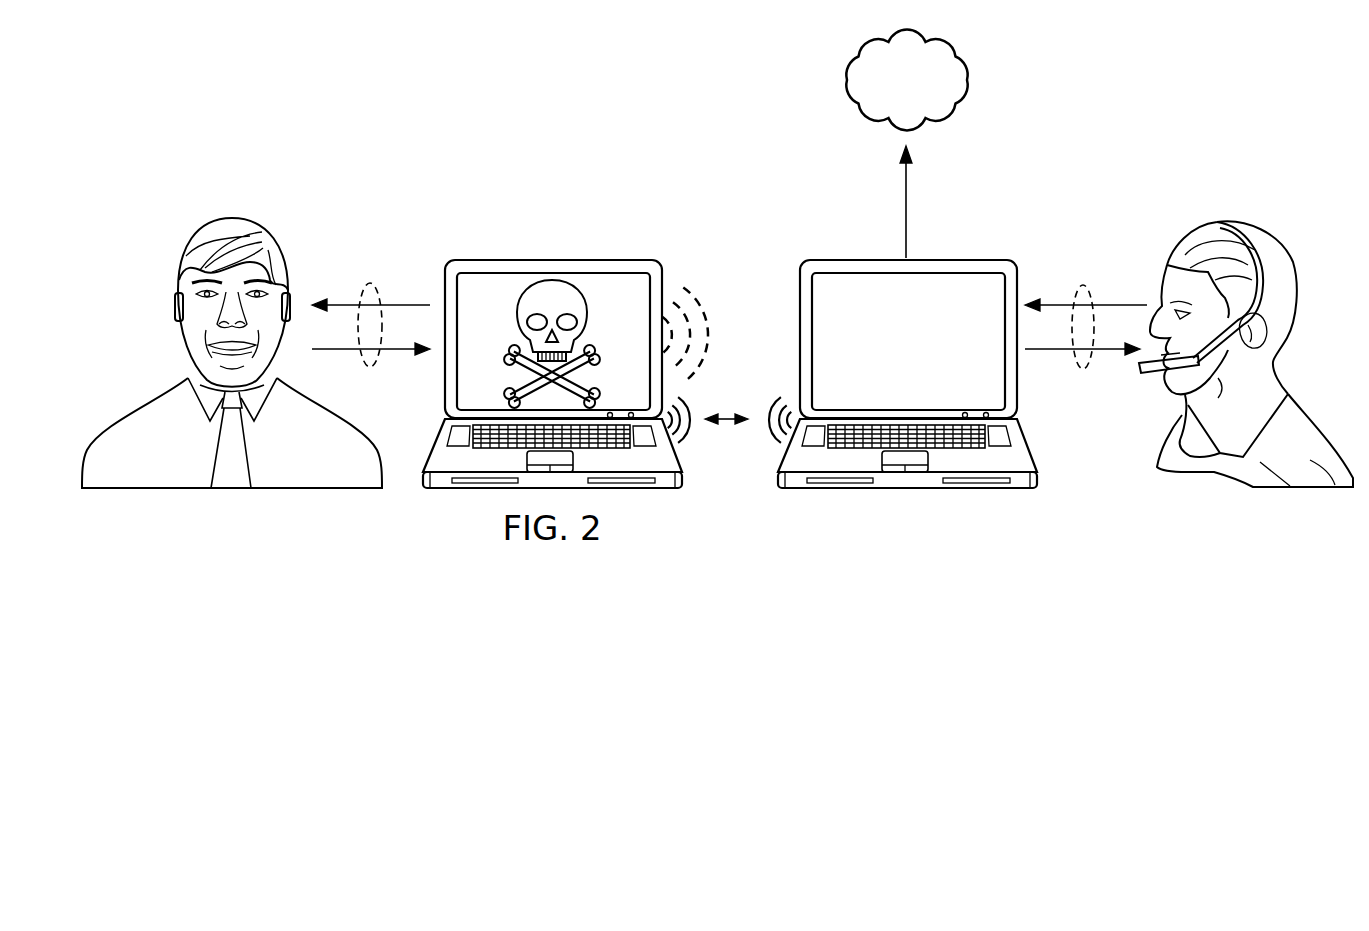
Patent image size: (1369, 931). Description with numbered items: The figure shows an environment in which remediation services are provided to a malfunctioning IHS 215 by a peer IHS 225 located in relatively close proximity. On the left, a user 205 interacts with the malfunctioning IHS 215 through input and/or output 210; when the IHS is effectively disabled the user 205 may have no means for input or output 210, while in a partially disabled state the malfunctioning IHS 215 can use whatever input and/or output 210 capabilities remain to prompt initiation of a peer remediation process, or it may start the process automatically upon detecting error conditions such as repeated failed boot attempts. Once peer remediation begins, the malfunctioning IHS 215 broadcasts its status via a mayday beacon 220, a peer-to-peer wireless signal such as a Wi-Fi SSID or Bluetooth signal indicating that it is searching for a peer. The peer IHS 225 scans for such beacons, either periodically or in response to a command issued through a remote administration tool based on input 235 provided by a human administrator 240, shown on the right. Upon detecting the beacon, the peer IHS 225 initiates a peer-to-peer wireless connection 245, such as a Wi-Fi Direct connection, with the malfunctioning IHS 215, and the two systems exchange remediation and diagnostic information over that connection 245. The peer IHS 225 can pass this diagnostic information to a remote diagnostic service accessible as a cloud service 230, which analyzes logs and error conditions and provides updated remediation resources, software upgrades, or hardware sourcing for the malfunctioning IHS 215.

The user 205 is at (233, 216).
The input and/or output 210 is at (371, 283).
The malfunctioning IHS 215 is at (551, 260).
The mayday beacon 220 is at (707, 313).
The peer IHS 225 is at (906, 490).
The cloud service 230 is at (888, 95).
The input 235 is at (1087, 283).
The human administrator 240 is at (1228, 218).
The peer-to-peer wireless connection 245 is at (731, 425).